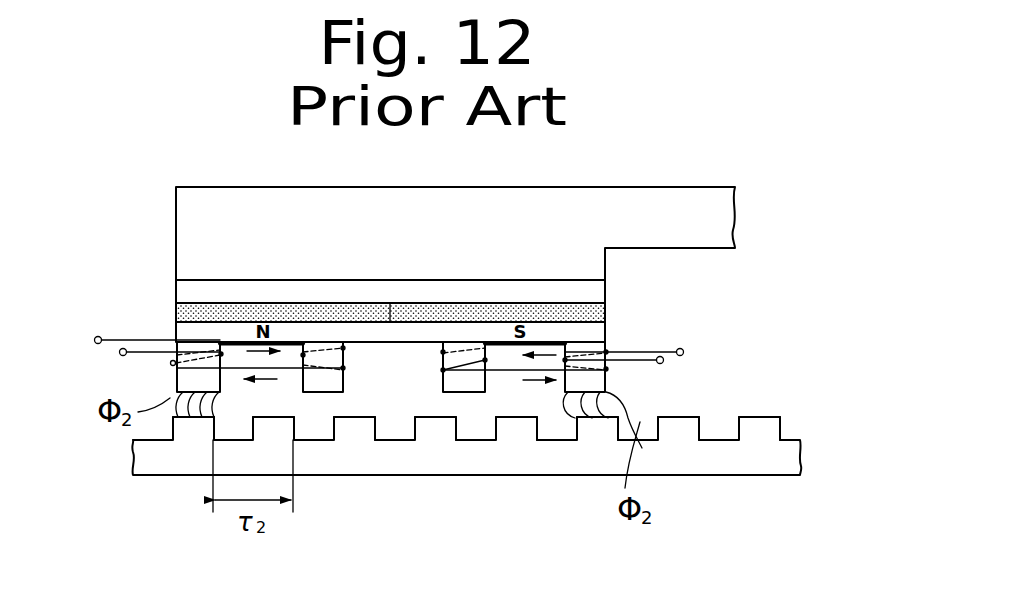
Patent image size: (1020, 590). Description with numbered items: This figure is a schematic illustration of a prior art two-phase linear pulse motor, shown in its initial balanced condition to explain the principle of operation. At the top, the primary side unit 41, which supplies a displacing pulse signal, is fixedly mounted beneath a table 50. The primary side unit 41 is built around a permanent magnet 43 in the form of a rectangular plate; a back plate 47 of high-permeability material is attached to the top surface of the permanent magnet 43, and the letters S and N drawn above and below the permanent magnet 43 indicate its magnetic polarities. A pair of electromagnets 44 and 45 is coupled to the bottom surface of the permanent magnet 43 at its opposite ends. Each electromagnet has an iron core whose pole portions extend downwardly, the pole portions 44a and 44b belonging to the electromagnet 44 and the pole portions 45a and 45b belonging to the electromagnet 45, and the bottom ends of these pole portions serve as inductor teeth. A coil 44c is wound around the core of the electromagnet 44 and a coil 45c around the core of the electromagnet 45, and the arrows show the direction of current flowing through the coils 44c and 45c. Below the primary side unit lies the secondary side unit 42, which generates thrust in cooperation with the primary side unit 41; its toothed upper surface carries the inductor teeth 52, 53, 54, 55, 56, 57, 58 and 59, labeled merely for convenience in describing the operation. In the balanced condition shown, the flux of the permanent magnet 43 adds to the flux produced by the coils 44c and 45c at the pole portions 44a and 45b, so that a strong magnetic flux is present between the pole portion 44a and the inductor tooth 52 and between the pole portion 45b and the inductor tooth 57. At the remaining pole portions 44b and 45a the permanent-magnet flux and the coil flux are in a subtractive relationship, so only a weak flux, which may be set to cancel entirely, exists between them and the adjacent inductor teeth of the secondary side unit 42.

The table 50 is at (170, 216).
The primary side unit 41 is at (148, 292).
The back plate 47 is at (176, 290).
The permanent magnet 43 is at (606, 318).
The electromagnet 44 is at (172, 328).
The pole portion 44a is at (176, 378).
The pole portion 44b is at (343, 382).
The coil 44c is at (118, 340).
The electromagnet 45 is at (610, 330).
The pole portion 45a is at (485, 382).
The pole portion 45b is at (612, 379).
The coil 45c is at (662, 350).
The secondary side unit 42 is at (782, 481).
The inductor tooth 52 is at (188, 428).
The inductor tooth 53 is at (280, 425).
The inductor tooth 54 is at (357, 428).
The inductor tooth 55 is at (437, 430).
The inductor tooth 56 is at (510, 430).
The inductor tooth 57 is at (595, 430).
The inductor tooth 58 is at (678, 430).
The inductor tooth 59 is at (762, 430).